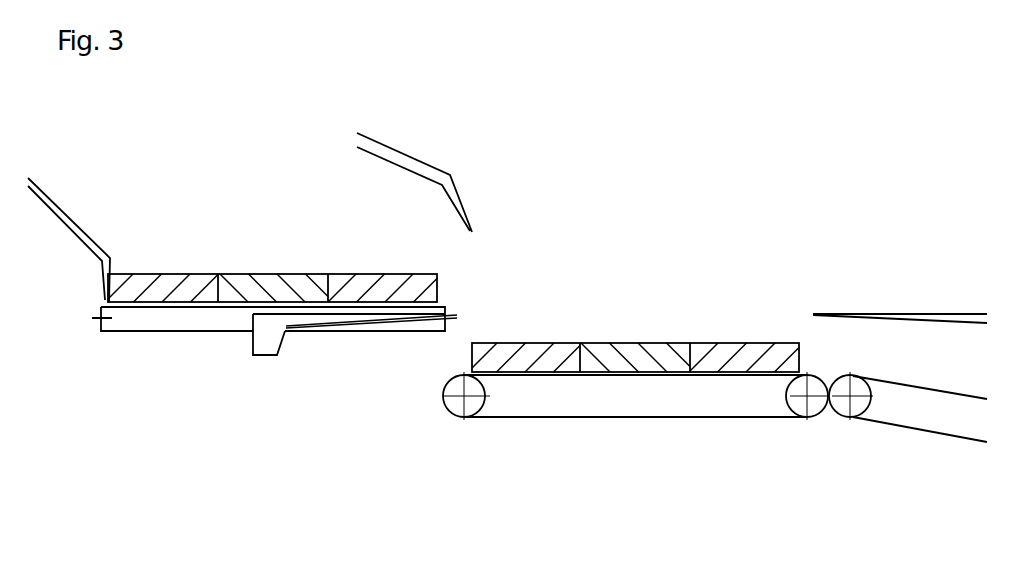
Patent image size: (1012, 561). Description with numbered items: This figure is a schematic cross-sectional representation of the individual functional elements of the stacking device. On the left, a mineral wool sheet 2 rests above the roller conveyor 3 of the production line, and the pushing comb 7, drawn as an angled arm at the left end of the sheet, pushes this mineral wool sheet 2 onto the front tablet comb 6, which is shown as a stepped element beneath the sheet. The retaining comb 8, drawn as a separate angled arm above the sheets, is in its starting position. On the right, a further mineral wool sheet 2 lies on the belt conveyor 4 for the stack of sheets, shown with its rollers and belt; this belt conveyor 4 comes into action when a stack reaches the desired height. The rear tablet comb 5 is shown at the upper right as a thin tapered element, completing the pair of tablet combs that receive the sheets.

The mineral wool sheet 2 is at (268, 278).
The roller conveyor of the production line 3 is at (143, 320).
The belt conveyor for stack of sheets 4 is at (657, 417).
The rear tablet comb 5 is at (922, 313).
The front tablet comb 6 is at (273, 328).
The pushing comb 7 is at (58, 203).
The retaining comb 8 is at (427, 160).